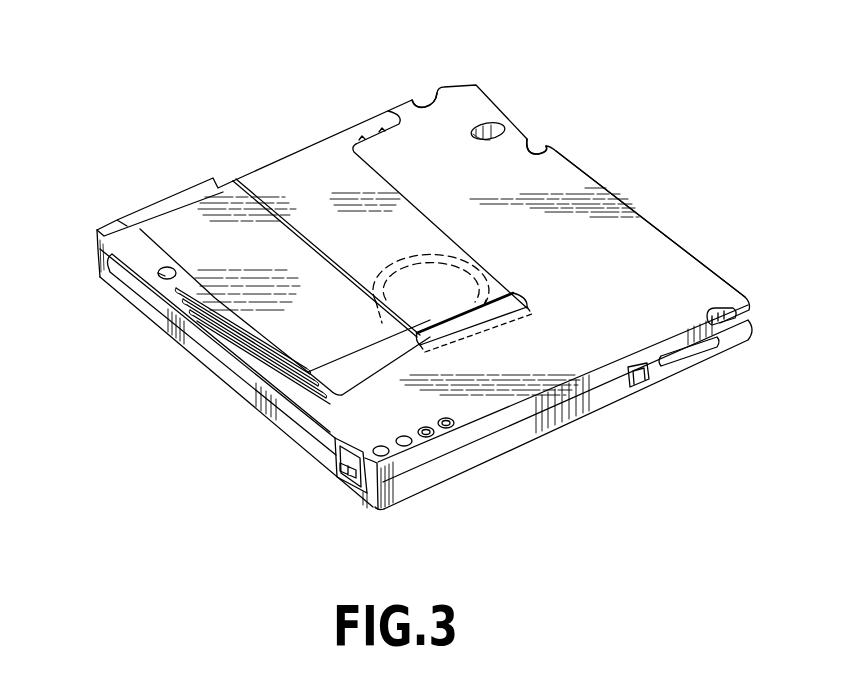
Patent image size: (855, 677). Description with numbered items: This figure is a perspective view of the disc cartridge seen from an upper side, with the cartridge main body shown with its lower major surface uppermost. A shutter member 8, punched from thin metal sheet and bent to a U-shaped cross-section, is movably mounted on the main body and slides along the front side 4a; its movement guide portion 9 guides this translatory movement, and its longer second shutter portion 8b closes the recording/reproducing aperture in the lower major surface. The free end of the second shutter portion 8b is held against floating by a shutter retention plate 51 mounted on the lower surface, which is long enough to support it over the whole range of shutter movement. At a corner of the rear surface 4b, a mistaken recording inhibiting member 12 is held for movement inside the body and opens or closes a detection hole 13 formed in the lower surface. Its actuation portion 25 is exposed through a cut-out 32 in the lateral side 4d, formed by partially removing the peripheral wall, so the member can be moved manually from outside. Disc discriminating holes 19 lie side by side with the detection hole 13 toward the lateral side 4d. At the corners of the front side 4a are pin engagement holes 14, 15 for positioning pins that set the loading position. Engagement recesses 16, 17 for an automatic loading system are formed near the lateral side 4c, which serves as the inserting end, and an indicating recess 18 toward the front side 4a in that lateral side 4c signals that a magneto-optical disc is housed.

The front side of the cartridge main body 4a is at (216, 178).
The rear surface of the cartridge main body 4b is at (580, 395).
The lateral side of the cartridge main body 4c is at (638, 212).
The lateral side of the cartridge main body 4d is at (208, 350).
The shutter member 8 is at (491, 199).
The second shutter portion 8b is at (382, 199).
The movement guide portion 9 is at (375, 120).
The mistaken recording inhibiting member 12 is at (319, 493).
The detection hole 13 is at (383, 457).
The pin engagement hole 14 is at (158, 278).
The pin engagement hole 15 is at (490, 122).
The engagement recess 16 is at (428, 100).
The engagement recess 17 is at (722, 323).
The indicating recess 18 is at (546, 152).
The disc discriminating holes 19 is at (406, 447).
The actuation portion 25 is at (353, 484).
The cut-out 32 is at (337, 475).
The shutter retention plate 51 is at (272, 418).